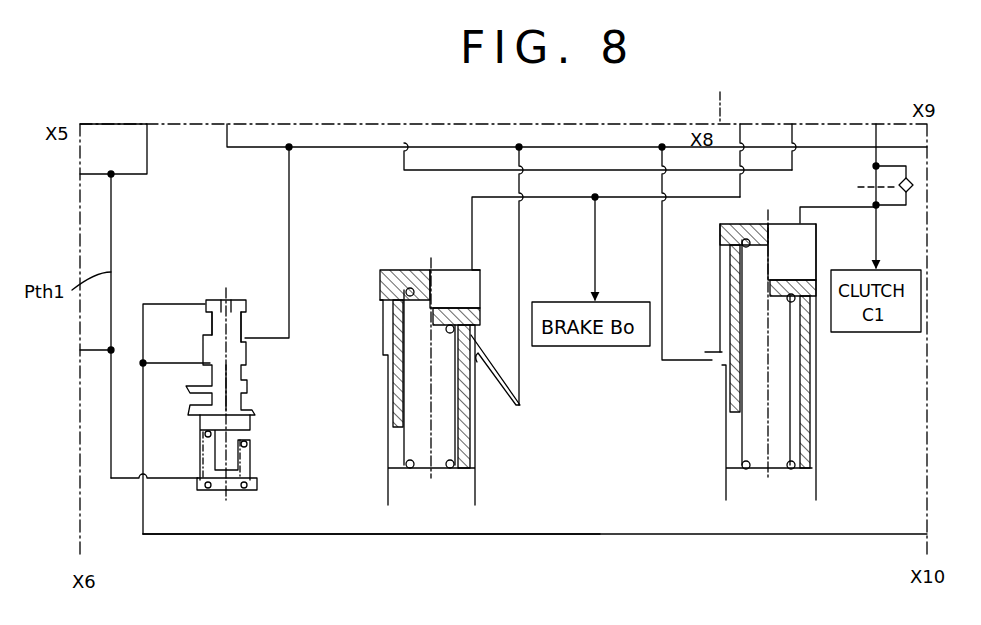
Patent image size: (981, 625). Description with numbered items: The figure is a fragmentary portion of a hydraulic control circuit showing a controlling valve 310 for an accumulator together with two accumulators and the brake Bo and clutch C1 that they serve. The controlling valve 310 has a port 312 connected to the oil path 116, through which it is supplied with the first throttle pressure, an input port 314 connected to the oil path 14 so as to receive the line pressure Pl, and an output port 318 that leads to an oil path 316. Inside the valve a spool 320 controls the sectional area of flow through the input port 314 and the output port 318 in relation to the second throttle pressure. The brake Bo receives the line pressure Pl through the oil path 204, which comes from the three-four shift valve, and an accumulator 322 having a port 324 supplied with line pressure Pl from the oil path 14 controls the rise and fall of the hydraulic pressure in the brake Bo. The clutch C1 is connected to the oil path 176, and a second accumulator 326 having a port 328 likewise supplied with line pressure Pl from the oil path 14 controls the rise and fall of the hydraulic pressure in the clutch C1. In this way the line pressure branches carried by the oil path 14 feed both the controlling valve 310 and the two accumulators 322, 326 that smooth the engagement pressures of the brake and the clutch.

The oil path 14 is at (358, 146).
The oil path 116 is at (111, 230).
The oil path 176 is at (876, 132).
The oil path 204 is at (742, 135).
The controlling valve 310 is at (222, 288).
The port 312 is at (257, 482).
The input port 314 is at (246, 337).
The oil path 316 is at (463, 535).
The output port 318 is at (206, 362).
The spool 320 is at (236, 396).
The accumulator 322 is at (421, 268).
The port 324 is at (494, 376).
The accumulator 326 is at (777, 220).
The port 328 is at (718, 360).